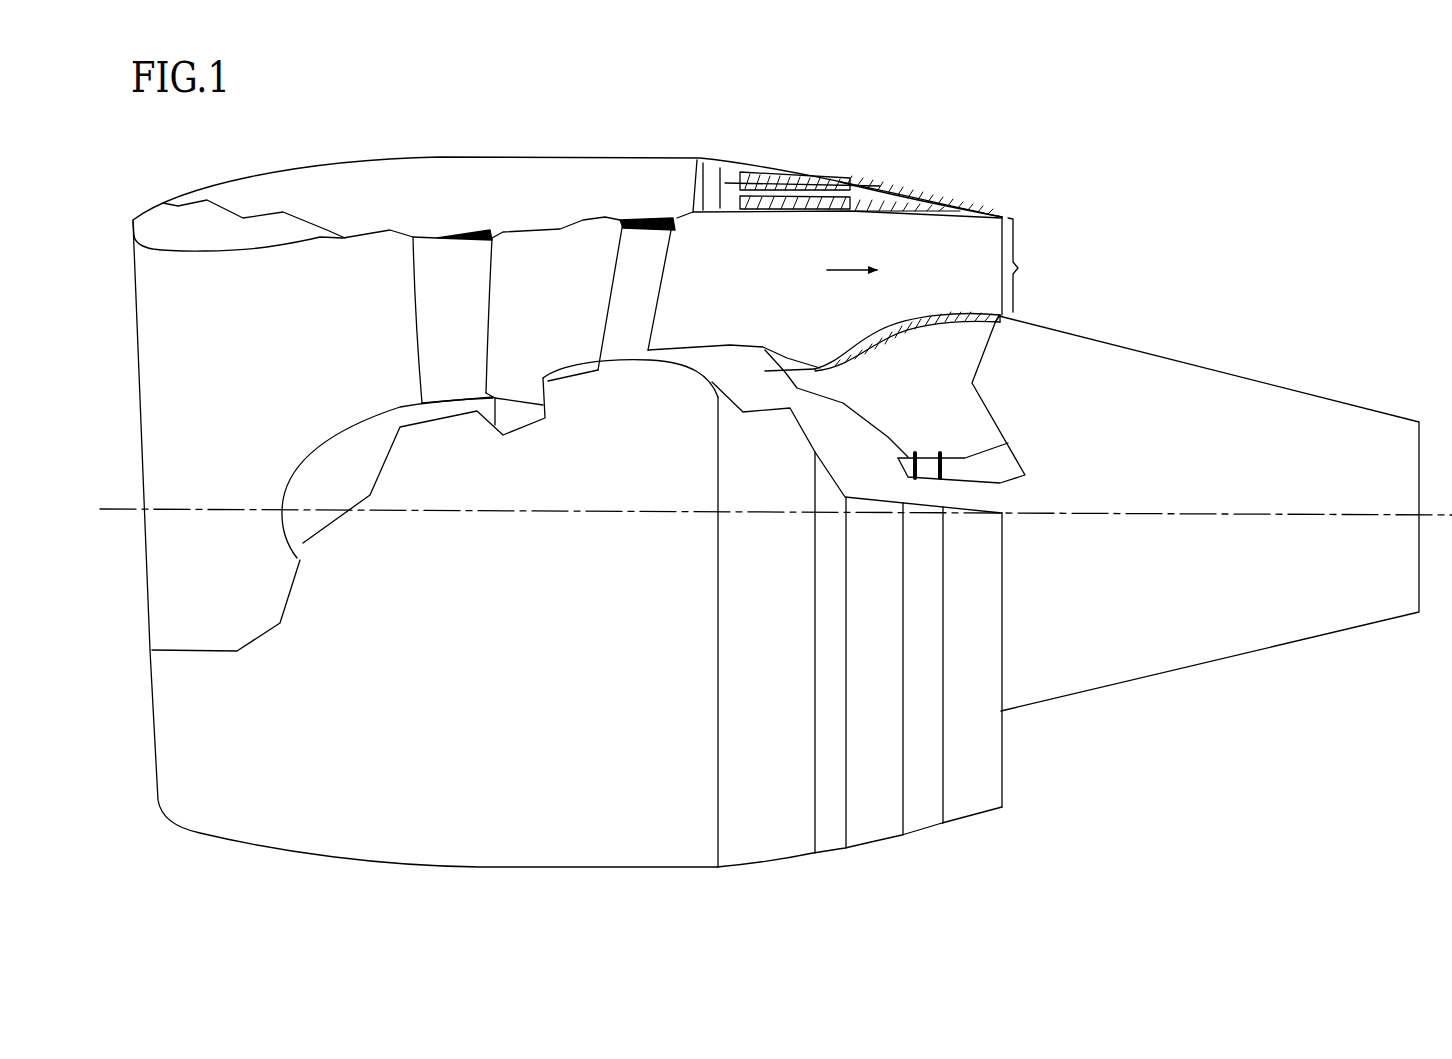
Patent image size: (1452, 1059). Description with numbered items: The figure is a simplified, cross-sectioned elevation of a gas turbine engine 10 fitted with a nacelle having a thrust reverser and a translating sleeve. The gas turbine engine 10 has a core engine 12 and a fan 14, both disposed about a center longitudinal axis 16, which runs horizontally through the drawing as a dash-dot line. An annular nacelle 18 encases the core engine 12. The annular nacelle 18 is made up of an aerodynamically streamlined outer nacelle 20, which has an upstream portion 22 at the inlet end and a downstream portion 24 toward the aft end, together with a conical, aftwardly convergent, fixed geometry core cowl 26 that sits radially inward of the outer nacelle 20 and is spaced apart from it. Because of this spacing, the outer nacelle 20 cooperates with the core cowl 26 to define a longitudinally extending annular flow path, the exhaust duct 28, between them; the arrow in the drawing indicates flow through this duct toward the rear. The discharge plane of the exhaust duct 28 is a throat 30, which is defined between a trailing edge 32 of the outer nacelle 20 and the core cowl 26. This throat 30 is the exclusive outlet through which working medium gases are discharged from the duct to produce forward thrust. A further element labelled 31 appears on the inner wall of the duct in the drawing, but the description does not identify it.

The gas turbine engine 10 is at (883, 112).
The core engine 12 is at (972, 463).
The fan 14 is at (460, 313).
The center longitudinal axis 16 is at (197, 508).
The annular nacelle 18 is at (596, 110).
The outer nacelle 20 is at (637, 158).
The upstream portion 22 is at (205, 242).
The downstream portion 24 is at (855, 190).
The core cowl 26 is at (1077, 328).
The exhaust duct 28 is at (833, 270).
The throat 30 is at (1033, 265).
The inner fairing wall 31 is at (978, 310).
The trailing edge 32 is at (1005, 217).